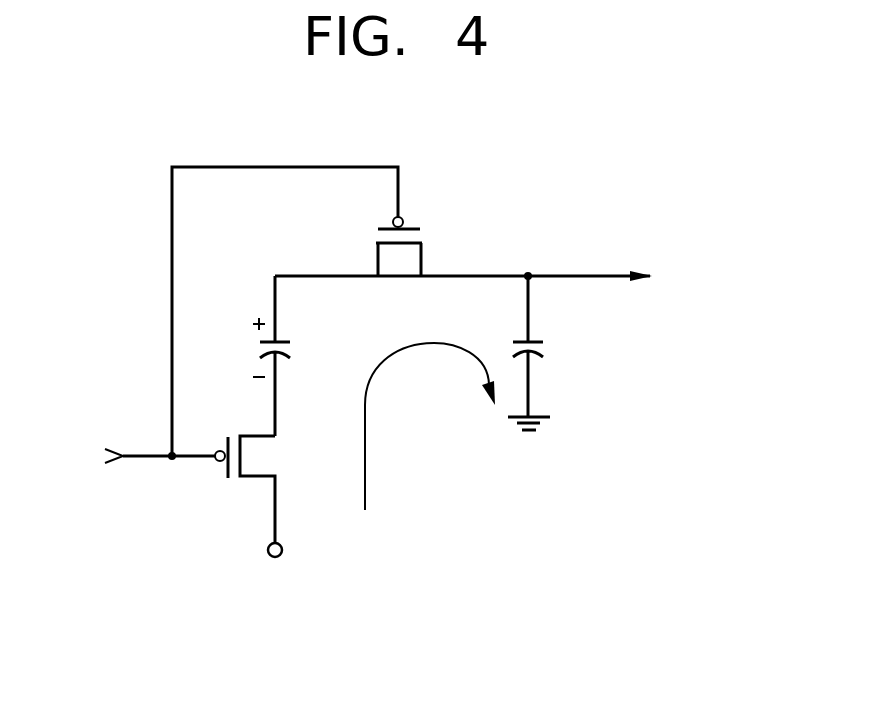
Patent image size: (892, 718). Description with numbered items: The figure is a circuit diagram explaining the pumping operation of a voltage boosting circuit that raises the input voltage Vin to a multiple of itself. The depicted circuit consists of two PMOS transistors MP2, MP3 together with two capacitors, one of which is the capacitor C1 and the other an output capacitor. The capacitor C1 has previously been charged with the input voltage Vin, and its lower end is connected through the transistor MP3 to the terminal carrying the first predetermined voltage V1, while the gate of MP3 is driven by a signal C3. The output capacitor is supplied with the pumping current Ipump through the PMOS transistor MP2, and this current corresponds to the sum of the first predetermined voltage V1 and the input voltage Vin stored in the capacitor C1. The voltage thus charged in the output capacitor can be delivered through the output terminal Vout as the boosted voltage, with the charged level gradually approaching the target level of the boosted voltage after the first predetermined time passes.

The PMOS transistor MP2 is at (396, 265).
The PMOS transistor MP3 is at (274, 489).
The capacitor C1 is at (292, 356).
The clock signal C3 input C3 is at (137, 455).
The output terminal Vout is at (703, 280).
The first predetermined voltage V1 is at (277, 571).
The pumping current Ipump is at (430, 426).